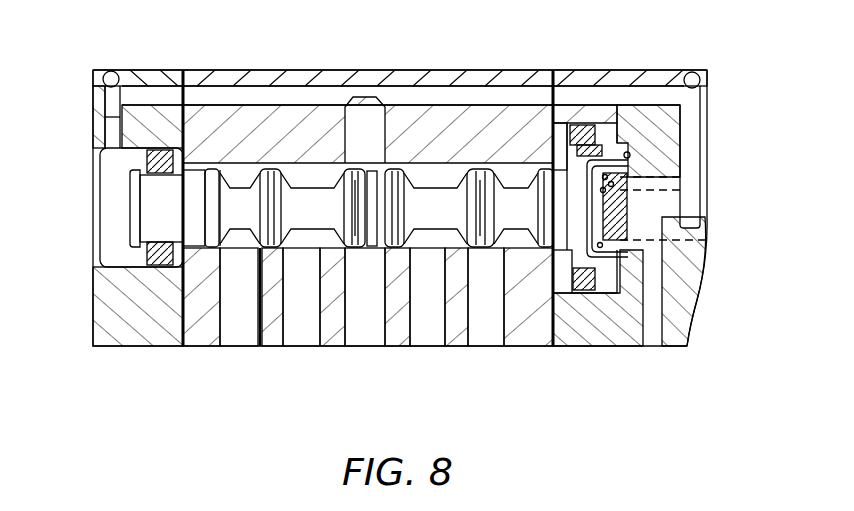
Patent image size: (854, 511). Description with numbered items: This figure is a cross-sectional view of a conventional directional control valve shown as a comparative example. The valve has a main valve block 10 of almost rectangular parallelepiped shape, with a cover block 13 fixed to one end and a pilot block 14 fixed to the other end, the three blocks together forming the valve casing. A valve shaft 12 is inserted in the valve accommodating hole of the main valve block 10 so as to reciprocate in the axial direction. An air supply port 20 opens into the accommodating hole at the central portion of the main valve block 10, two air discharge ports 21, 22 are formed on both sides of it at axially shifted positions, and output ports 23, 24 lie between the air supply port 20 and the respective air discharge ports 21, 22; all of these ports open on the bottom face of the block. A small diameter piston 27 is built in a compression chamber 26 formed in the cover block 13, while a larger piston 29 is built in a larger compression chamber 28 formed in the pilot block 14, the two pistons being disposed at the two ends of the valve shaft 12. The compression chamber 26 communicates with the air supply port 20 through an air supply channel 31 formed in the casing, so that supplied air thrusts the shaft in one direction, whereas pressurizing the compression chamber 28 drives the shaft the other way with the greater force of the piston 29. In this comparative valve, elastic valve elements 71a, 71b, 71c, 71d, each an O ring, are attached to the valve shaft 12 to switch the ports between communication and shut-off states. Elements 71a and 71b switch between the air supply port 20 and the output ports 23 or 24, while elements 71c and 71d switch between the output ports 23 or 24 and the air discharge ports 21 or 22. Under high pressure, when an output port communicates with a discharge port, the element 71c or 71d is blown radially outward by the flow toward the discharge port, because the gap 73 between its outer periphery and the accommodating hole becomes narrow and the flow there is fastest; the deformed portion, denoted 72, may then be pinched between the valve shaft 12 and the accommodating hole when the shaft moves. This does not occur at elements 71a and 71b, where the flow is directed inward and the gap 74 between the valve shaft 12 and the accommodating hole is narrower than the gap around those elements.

The main valve block 10 is at (215, 70).
The valve shaft 12 is at (443, 202).
The cover block 13 is at (141, 70).
The pilot block 14 is at (647, 70).
The air supply port 20 is at (355, 347).
The air discharge port 21 is at (478, 347).
The air discharge port 22 is at (229, 347).
The output port 23 is at (425, 347).
The output port 24 is at (292, 347).
The compression chamber 26 is at (113, 240).
The small diameter piston 27 is at (140, 199).
The compression chamber 28 is at (603, 125).
The piston 29 is at (612, 263).
The air supply channel 31 is at (519, 96).
The elastic valve element 71a is at (394, 173).
The elastic valve element 71b is at (358, 175).
The elastic valve element 71c is at (482, 175).
The elastic valve element 71d is at (272, 172).
The pinched portion 72 is at (261, 346).
The gap 73 is at (367, 252).
The gap 74 is at (333, 252).